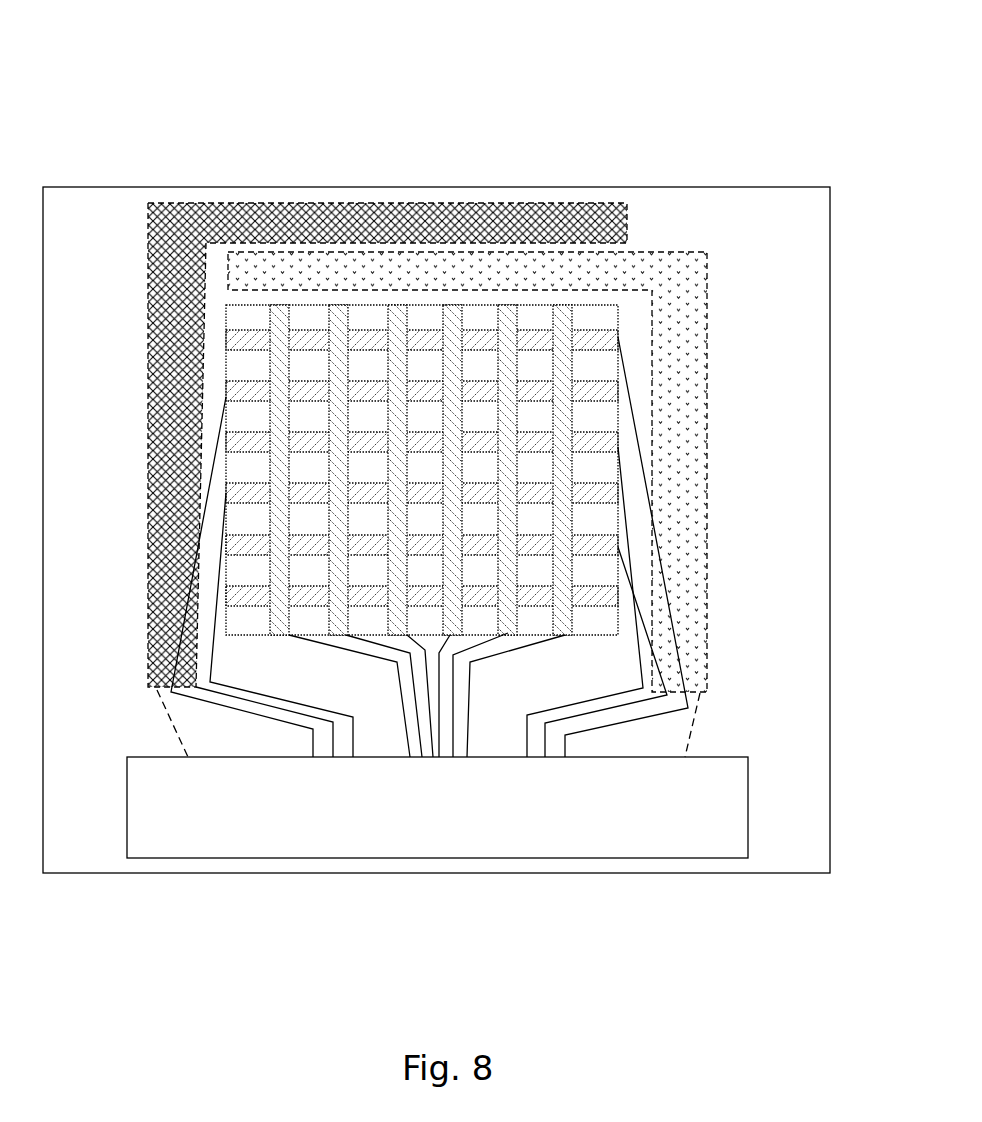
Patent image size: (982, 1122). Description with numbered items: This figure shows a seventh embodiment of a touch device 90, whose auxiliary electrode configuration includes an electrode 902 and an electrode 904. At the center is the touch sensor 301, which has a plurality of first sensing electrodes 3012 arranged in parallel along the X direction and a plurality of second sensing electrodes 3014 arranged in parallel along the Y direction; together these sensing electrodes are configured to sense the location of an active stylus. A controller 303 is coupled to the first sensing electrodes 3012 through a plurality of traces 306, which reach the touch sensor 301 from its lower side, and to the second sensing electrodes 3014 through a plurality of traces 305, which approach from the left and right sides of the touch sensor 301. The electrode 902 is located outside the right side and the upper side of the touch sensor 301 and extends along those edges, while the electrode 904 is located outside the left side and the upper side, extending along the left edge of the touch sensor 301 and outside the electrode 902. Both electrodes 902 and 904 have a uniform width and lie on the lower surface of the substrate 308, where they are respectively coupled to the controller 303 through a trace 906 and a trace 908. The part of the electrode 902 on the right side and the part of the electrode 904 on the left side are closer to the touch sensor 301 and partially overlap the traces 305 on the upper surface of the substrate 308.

The touch device 90 is at (779, 103).
The substrate 308 is at (833, 497).
The controller 303 is at (728, 810).
The electrode 904 is at (150, 277).
The electrode 902 is at (690, 318).
The touch sensor 301 is at (506, 421).
The first sensing electrodes 3012 is at (563, 412).
The second sensing electrodes 3014 is at (600, 440).
The traces 305 is at (313, 748).
The traces 306 is at (435, 757).
The trace 908 is at (165, 713).
The trace 906 is at (695, 728).